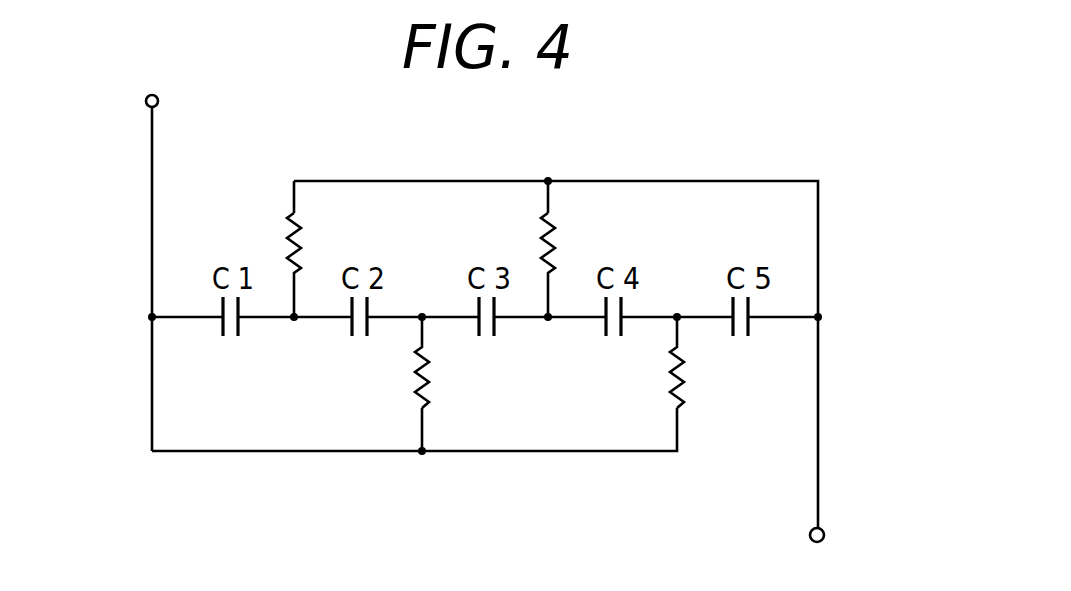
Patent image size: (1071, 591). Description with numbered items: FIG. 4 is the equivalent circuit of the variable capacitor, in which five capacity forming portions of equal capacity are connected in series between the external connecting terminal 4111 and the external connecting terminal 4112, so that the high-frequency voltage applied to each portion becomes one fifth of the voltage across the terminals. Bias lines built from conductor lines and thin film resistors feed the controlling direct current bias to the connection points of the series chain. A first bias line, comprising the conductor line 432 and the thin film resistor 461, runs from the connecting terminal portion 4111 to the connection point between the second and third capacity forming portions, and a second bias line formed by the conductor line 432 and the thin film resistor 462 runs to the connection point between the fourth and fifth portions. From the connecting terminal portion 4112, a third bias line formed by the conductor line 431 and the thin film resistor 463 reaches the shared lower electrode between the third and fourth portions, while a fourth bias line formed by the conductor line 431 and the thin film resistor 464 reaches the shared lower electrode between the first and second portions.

The connecting terminal portion 4111 is at (146, 100).
The connecting terminal portion 4112 is at (824, 532).
The conductor line 431 is at (496, 181).
The conductor line 432 is at (350, 452).
The thin film resistor 461 is at (426, 378).
The thin film resistor 462 is at (681, 378).
The thin film resistor 463 is at (552, 217).
The thin film resistor 464 is at (298, 217).